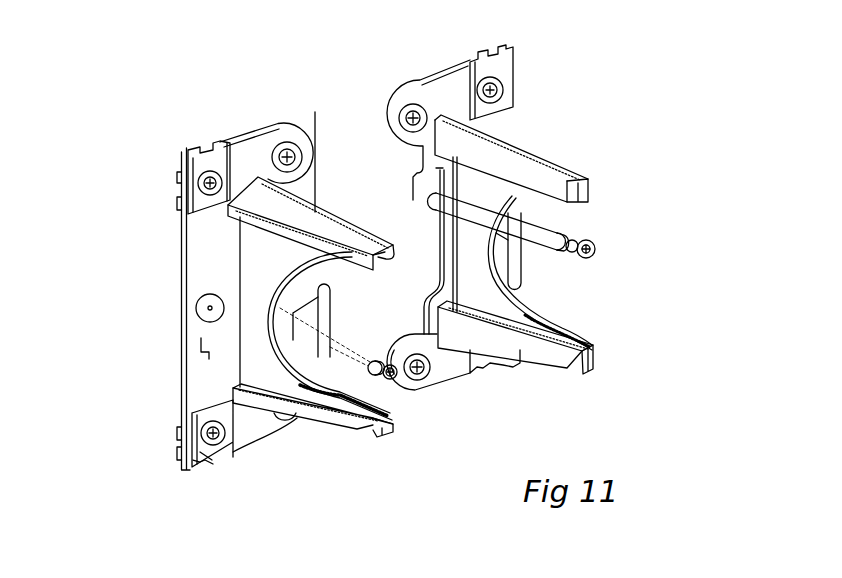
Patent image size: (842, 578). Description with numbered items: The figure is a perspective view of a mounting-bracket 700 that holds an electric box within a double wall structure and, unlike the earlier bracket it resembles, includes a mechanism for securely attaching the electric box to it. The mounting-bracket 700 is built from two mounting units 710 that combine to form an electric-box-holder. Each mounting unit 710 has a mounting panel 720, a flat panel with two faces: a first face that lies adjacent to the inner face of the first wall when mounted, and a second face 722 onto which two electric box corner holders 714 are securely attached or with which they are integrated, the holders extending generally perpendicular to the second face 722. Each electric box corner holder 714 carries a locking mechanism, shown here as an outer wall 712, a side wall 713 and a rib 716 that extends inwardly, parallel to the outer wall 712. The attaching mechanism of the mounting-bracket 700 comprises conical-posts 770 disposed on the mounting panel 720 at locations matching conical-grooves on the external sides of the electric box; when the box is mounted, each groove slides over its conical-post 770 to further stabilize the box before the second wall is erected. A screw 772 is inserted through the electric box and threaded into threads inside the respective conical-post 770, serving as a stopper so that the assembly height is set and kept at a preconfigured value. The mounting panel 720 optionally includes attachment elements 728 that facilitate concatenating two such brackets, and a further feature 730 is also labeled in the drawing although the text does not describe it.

The mounting-bracket 700 is at (171, 136).
The mounting unit 710 is at (260, 125).
The outer wall 712 is at (237, 258).
The side wall 713 is at (407, 427).
The electric box corner holder 714 is at (310, 193).
The rib 716 is at (367, 270).
The mounting panel 720 is at (181, 258).
The second face 722 is at (197, 353).
The attachment element 728 is at (181, 162).
The tab screw 730 is at (208, 453).
The conical-post 770 is at (327, 333).
The screw 772 is at (598, 247).